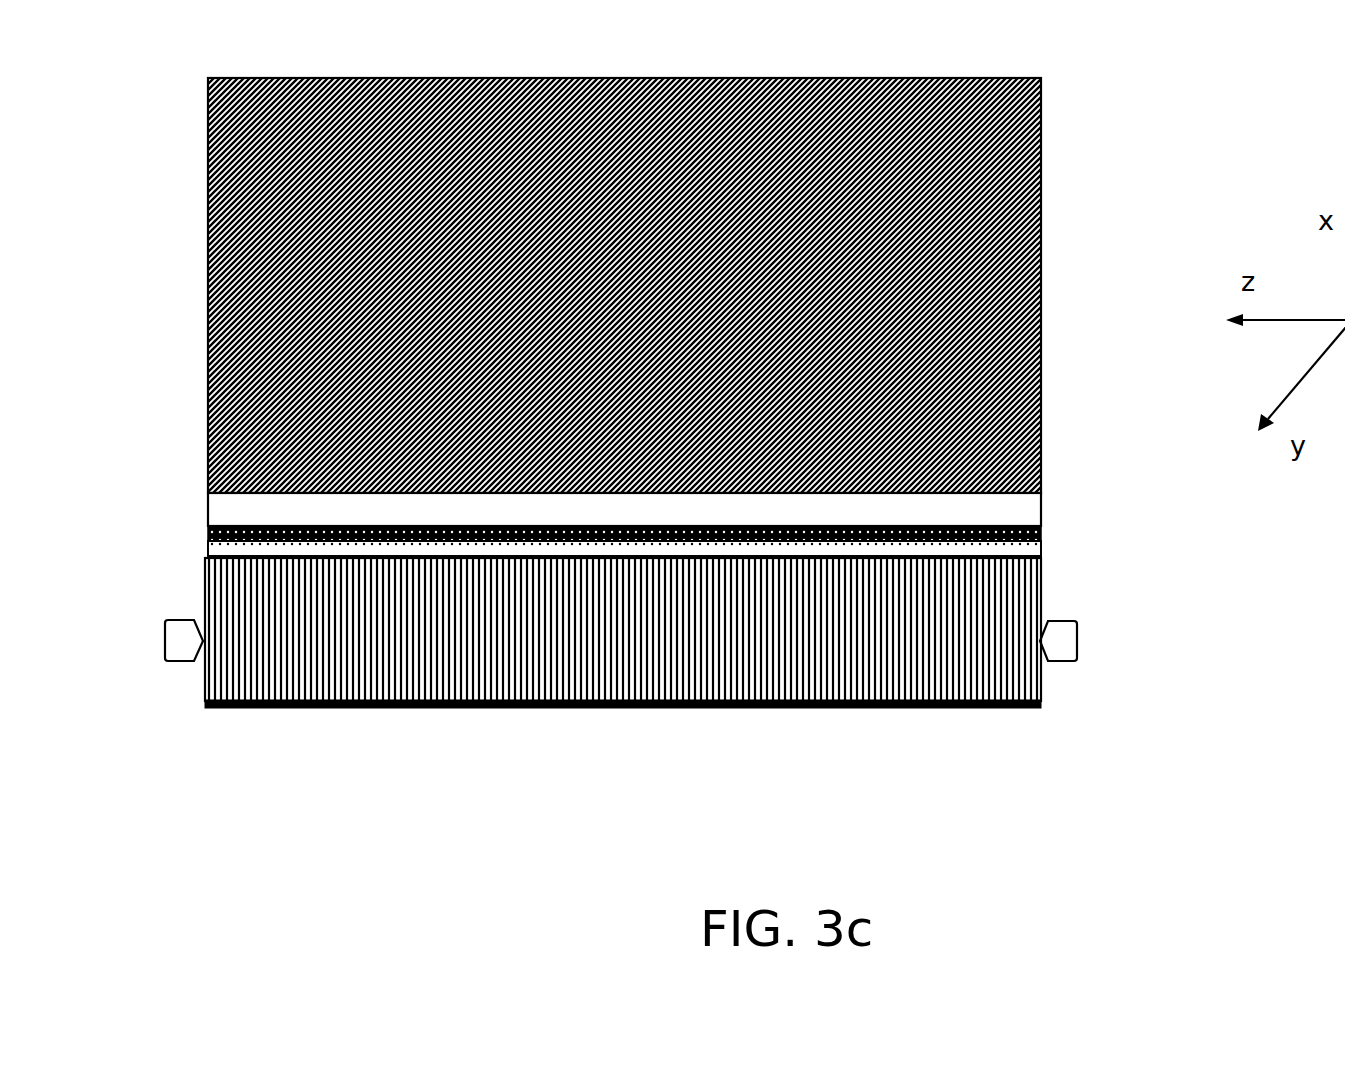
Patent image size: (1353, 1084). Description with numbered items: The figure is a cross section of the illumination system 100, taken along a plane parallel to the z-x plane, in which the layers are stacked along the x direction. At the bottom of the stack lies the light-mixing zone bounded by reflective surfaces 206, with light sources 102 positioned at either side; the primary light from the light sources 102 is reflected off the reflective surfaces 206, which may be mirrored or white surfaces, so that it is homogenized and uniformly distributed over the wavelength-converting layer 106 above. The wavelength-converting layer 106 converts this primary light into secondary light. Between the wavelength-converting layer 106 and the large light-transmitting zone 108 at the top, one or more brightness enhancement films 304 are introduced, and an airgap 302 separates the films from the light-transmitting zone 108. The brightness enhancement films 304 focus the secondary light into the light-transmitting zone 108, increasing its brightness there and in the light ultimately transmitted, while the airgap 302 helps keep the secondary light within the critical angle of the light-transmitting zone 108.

The illumination system 100 is at (615, 482).
The light sources 102 is at (157, 633).
The wavelength-converting layer 106 is at (200, 539).
The light-transmitting zone 108 is at (624, 285).
The reflective surfaces 206 is at (615, 702).
The airgap 302 is at (1035, 503).
The brightness enhancement films 304 is at (200, 522).